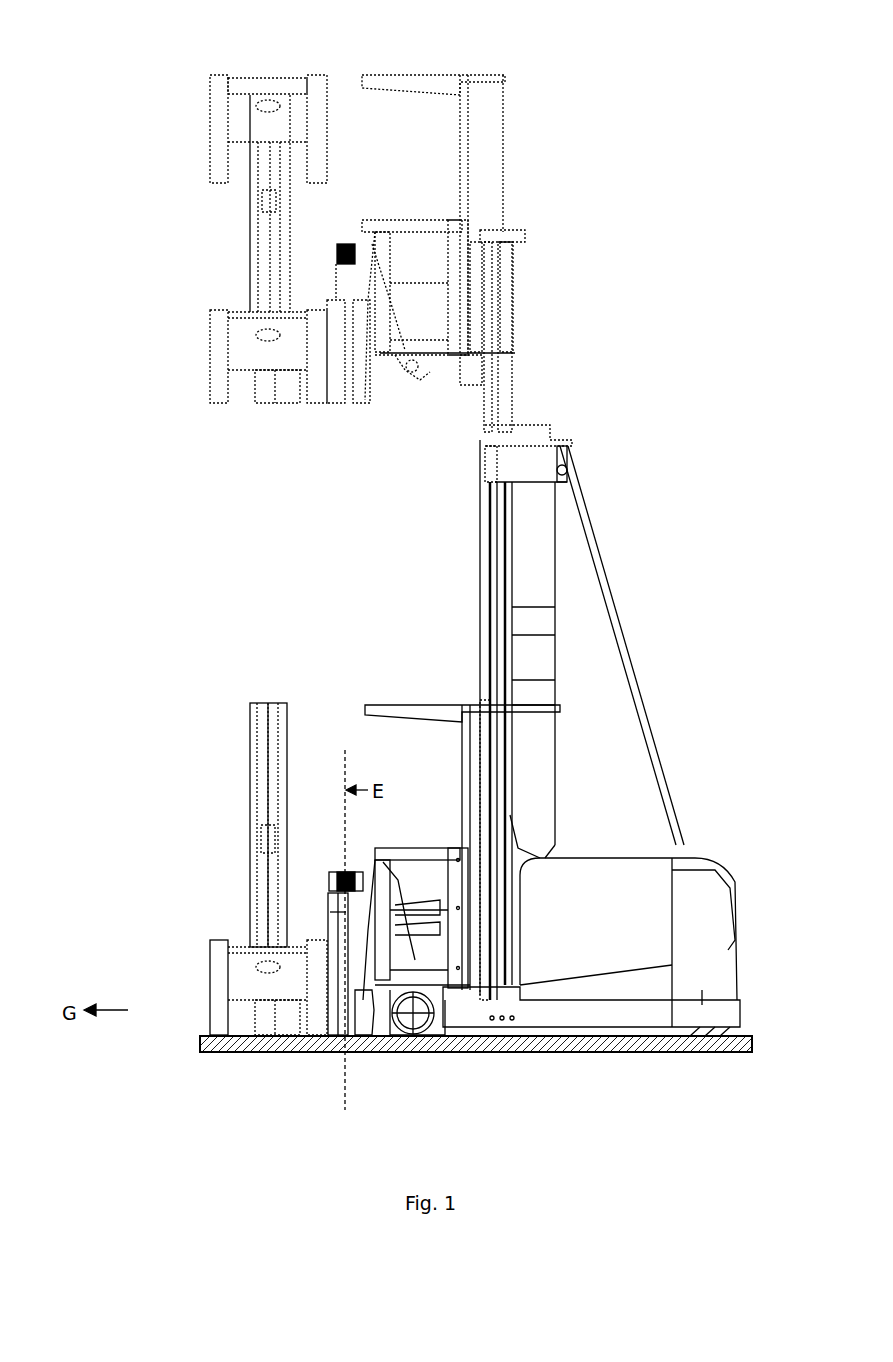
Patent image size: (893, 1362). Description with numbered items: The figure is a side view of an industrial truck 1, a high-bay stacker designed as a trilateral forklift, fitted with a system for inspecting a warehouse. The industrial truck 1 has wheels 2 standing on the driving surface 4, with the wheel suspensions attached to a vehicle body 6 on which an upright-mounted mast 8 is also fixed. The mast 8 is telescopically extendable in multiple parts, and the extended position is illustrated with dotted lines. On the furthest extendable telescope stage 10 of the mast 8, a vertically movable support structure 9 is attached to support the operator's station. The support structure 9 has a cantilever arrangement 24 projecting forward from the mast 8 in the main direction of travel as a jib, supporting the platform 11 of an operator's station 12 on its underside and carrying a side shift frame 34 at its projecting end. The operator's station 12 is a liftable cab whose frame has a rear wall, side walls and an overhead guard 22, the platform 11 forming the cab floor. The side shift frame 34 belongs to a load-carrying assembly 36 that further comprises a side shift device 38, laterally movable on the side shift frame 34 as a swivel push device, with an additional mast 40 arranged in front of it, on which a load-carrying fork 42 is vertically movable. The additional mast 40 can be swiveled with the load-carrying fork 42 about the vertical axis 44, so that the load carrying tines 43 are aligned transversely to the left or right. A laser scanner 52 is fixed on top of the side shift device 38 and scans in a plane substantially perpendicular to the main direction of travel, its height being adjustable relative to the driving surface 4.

The industrial truck 1 is at (672, 375).
The wheels 2 is at (425, 1038).
The driving surface 4 is at (560, 1052).
The vehicle body 6 is at (626, 880).
The mast 8 is at (485, 588).
The support structure 9 is at (460, 146).
The telescope stage 10 is at (522, 230).
The platform 11 is at (410, 372).
The operator's station 12 is at (435, 216).
The overhead guard 22 is at (450, 82).
The cantilever arrangement 24 is at (452, 385).
The side shift frame 34 is at (372, 385).
The load-carrying assembly 36 is at (268, 430).
The side shift device 38 is at (338, 290).
The additional mast 40 is at (250, 243).
The load-carrying fork 42 is at (215, 362).
The load carrying tines 43 is at (215, 405).
The vertical axis 44 is at (258, 737).
The laser scanner 52 is at (343, 250).